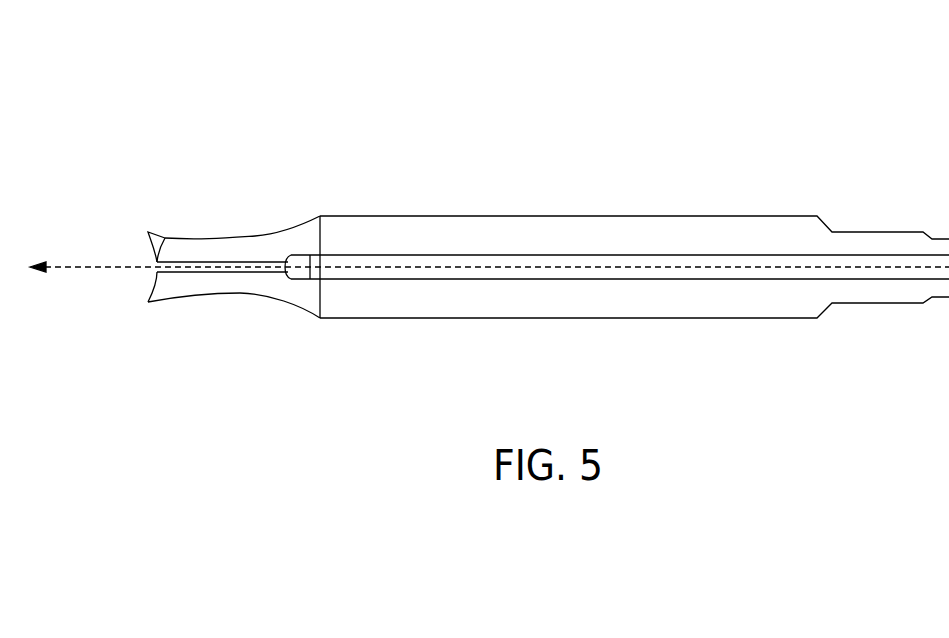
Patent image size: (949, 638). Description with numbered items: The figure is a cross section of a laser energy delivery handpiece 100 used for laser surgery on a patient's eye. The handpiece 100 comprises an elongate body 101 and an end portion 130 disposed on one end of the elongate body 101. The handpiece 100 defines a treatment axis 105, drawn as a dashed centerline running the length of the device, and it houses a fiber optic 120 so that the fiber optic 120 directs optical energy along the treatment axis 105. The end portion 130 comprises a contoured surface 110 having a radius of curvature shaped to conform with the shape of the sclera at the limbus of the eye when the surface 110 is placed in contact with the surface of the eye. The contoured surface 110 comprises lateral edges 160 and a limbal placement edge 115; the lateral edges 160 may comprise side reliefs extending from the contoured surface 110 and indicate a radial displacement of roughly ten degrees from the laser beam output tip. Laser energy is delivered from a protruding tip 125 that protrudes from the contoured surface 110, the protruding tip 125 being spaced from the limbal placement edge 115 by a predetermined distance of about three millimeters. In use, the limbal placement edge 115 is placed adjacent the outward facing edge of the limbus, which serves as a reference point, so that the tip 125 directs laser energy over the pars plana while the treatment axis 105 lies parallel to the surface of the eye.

The laser energy delivery handpiece 100 is at (653, 67).
The elongate body 101 is at (646, 224).
The treatment axis 105 is at (60, 267).
The contoured surface 110 is at (148, 234).
The limbal placement edge 115 is at (148, 303).
The fiber optic 120 is at (230, 262).
The protruding tip 125 is at (153, 275).
The end portion 130 is at (243, 293).
The lateral edges 160 is at (160, 236).